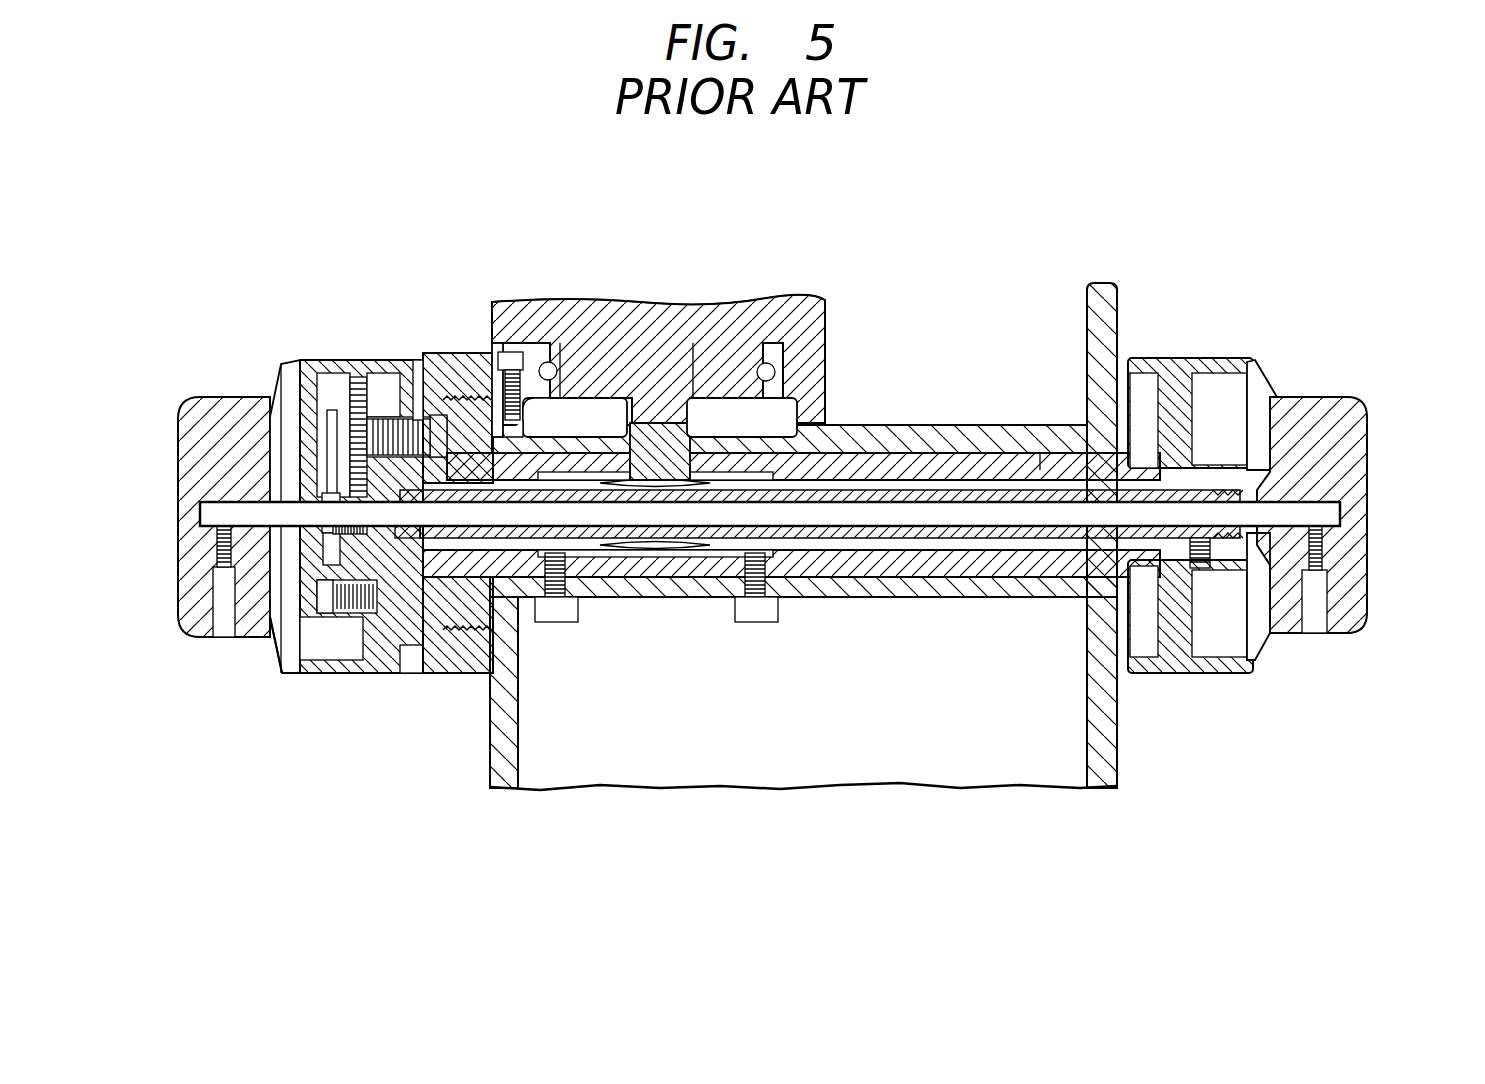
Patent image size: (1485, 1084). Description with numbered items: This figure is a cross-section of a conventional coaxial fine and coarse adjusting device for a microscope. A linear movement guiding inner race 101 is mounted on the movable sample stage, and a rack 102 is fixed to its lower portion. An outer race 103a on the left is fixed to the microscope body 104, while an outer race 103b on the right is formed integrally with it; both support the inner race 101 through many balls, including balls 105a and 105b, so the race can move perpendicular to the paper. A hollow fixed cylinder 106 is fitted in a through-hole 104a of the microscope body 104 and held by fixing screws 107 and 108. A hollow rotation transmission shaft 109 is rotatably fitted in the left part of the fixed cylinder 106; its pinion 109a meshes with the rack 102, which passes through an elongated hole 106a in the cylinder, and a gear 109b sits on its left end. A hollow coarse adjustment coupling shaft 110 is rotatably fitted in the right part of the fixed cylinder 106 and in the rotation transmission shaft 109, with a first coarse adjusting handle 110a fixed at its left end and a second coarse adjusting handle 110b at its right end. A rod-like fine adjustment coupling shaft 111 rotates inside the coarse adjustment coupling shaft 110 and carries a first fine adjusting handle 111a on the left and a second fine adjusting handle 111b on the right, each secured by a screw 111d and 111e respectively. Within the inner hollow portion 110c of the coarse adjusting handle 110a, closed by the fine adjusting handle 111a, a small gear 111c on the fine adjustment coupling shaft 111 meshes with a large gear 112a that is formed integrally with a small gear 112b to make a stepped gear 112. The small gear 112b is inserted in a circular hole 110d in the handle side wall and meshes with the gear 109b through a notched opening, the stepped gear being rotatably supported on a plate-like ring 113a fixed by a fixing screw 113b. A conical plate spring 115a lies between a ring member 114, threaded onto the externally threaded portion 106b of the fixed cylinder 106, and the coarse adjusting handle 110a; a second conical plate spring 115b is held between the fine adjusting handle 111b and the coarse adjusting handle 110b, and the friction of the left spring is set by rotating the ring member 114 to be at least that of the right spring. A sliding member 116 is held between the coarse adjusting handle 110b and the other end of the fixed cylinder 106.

The linear movement guiding inner race 101 is at (712, 330).
The rack 102 is at (664, 452).
The outer race 103a is at (552, 360).
The outer race 103b is at (802, 360).
The microscope body 104 is at (983, 423).
The through-hole 104a is at (1052, 458).
The ball 105a is at (559, 395).
The ball 105b is at (772, 395).
The hollow fixed cylinder 106 is at (892, 462).
The elongated hole 106a is at (692, 478).
The externally threaded portion 106b is at (455, 642).
The fixing screw 107 is at (558, 613).
The fixing screw 108 is at (755, 612).
The rotation transmission shaft 109 is at (533, 540).
The pinion 109a is at (690, 540).
The gear 109b is at (395, 588).
The coarse adjustment coupling shaft 110 is at (712, 577).
The first coarse adjusting handle 110a is at (340, 664).
The second coarse adjusting handle 110b is at (1173, 655).
The inner hollow portion 110c is at (316, 390).
The circular hole 110d is at (397, 400).
The fine adjustment coupling shaft 111 is at (800, 528).
The first fine adjusting handle 111a is at (203, 608).
The second fine adjusting handle 111b is at (1345, 603).
The small gear 111c is at (270, 618).
The screw 111d is at (210, 541).
The screw 111e is at (1322, 557).
The stepped gear 112 is at (470, 160).
The large gear 112a is at (350, 372).
The small gear 112b is at (404, 372).
The plate-like ring 113a is at (320, 372).
The fixing screw 113b is at (293, 645).
The ring member 114 is at (464, 368).
The conical plate spring 115a is at (432, 356).
The conical plate spring 115b is at (1309, 396).
The sliding member 116 is at (1239, 395).